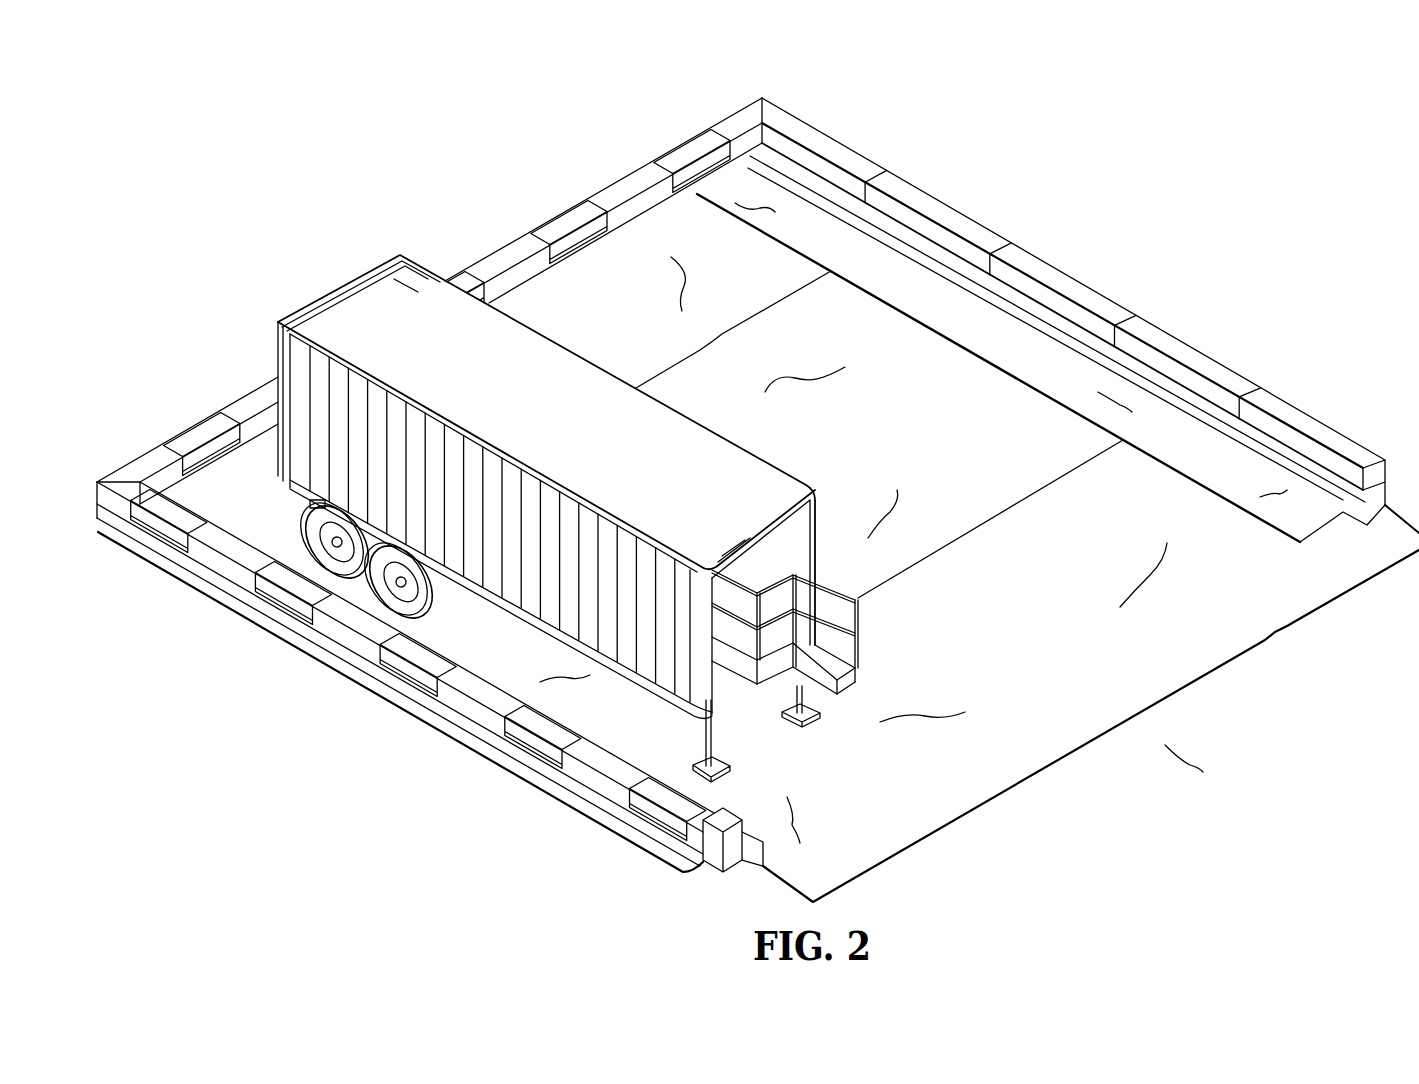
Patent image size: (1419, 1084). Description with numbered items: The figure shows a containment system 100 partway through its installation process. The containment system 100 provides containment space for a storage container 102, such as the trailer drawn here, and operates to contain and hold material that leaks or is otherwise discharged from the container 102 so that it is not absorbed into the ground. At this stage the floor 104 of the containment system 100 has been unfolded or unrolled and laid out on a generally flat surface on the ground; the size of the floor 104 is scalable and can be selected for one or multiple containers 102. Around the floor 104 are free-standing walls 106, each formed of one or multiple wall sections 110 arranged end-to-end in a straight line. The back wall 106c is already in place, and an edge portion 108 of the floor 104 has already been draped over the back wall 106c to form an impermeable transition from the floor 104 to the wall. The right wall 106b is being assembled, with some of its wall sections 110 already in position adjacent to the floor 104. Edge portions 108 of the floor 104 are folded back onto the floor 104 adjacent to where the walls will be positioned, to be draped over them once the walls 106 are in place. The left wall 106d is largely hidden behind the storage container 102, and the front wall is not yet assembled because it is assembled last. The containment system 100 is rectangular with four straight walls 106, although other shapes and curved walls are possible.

The containment system 100 is at (398, 96).
The container 102 is at (600, 380).
The floor 104 is at (997, 527).
The wall 106 is at (1214, 680).
The right wall 106b is at (1380, 426).
The back wall 106c is at (492, 257).
The left wall 106d is at (343, 636).
The edge portion 108 is at (987, 327).
The wall section 110 is at (815, 141).